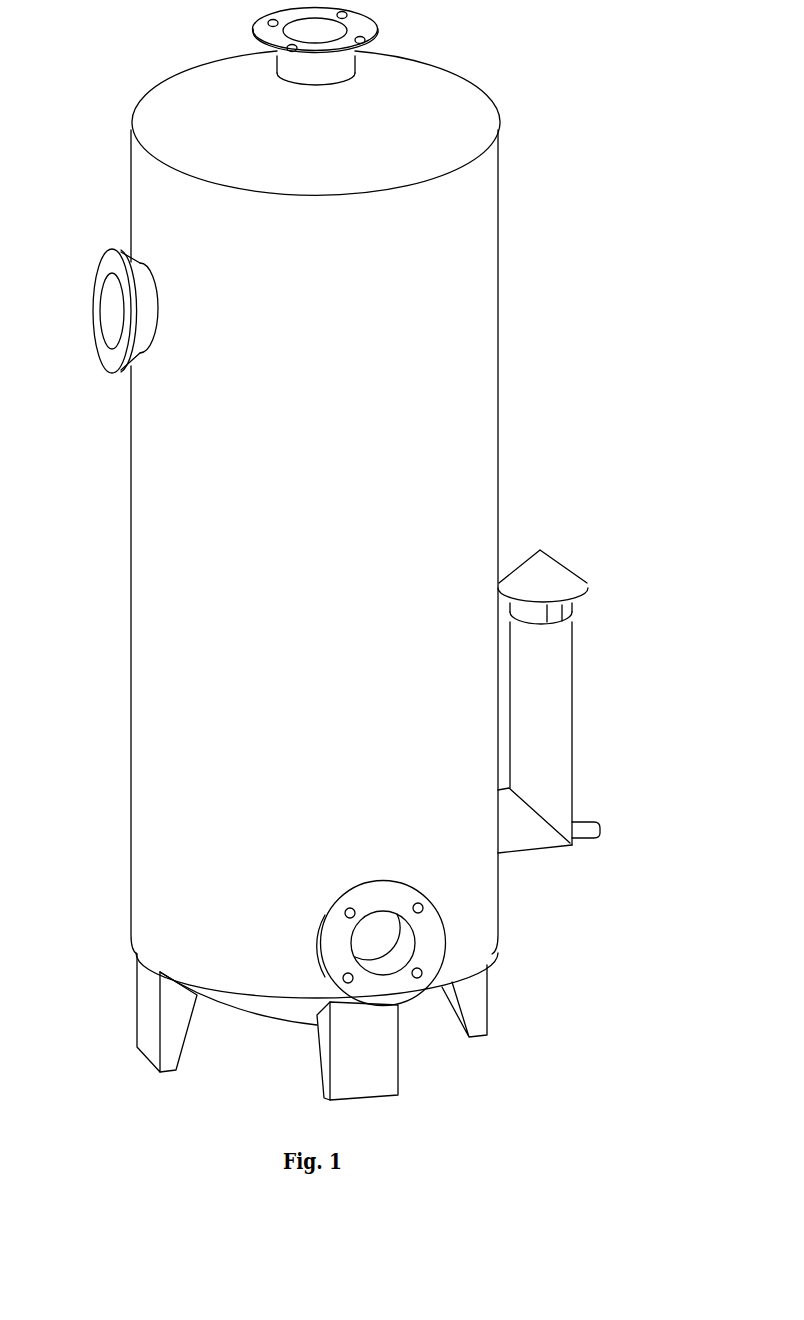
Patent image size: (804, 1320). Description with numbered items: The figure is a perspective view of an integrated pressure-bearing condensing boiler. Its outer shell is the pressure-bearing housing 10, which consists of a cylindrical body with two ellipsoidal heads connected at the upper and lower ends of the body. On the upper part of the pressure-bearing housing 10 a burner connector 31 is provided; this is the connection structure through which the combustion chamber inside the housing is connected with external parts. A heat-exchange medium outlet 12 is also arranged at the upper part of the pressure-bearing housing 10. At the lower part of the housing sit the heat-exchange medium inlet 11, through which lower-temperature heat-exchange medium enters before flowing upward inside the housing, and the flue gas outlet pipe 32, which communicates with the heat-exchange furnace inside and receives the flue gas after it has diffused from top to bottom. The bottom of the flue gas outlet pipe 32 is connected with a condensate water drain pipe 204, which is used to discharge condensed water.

The pressure-bearing housing 10 is at (465, 327).
The heat-exchange medium inlet 11 is at (403, 938).
The heat-exchange medium outlet 12 is at (333, 31).
The burner connector 31 is at (110, 362).
The flue gas outlet pipe 32 is at (557, 748).
The condensate water drain pipe 204 is at (590, 828).